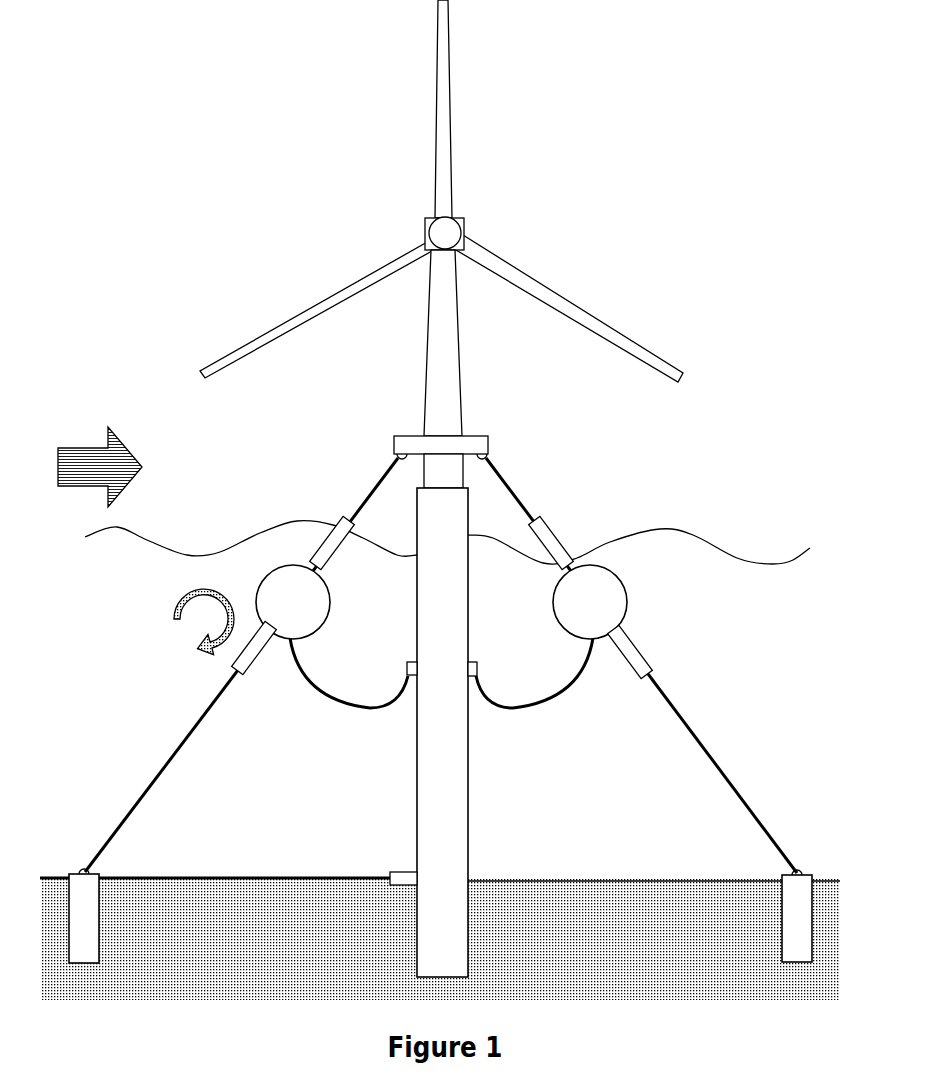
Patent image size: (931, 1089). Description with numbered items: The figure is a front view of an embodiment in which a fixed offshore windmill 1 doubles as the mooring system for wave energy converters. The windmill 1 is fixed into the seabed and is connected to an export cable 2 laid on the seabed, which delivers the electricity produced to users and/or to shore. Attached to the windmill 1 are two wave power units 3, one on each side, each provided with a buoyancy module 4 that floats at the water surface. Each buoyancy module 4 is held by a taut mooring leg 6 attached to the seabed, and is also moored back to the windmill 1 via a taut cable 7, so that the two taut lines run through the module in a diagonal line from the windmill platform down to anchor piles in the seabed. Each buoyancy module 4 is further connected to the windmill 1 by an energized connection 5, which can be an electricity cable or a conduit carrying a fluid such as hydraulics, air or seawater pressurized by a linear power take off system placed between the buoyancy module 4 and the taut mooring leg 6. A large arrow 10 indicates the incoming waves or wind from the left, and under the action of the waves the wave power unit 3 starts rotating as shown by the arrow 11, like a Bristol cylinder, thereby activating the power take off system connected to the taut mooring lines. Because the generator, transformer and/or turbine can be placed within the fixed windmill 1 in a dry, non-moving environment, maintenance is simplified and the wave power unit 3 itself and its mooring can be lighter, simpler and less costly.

The windmill 1 is at (452, 382).
The export cable 2 is at (283, 872).
The wave power unit 3 is at (441, 665).
The buoyancy module 4 is at (608, 597).
The energized connection 5 is at (548, 707).
The taut mooring leg 6 is at (688, 722).
The taut cable 7 is at (505, 478).
The wind/current direction arrow 10 is at (100, 460).
The arrow 11 is at (204, 611).